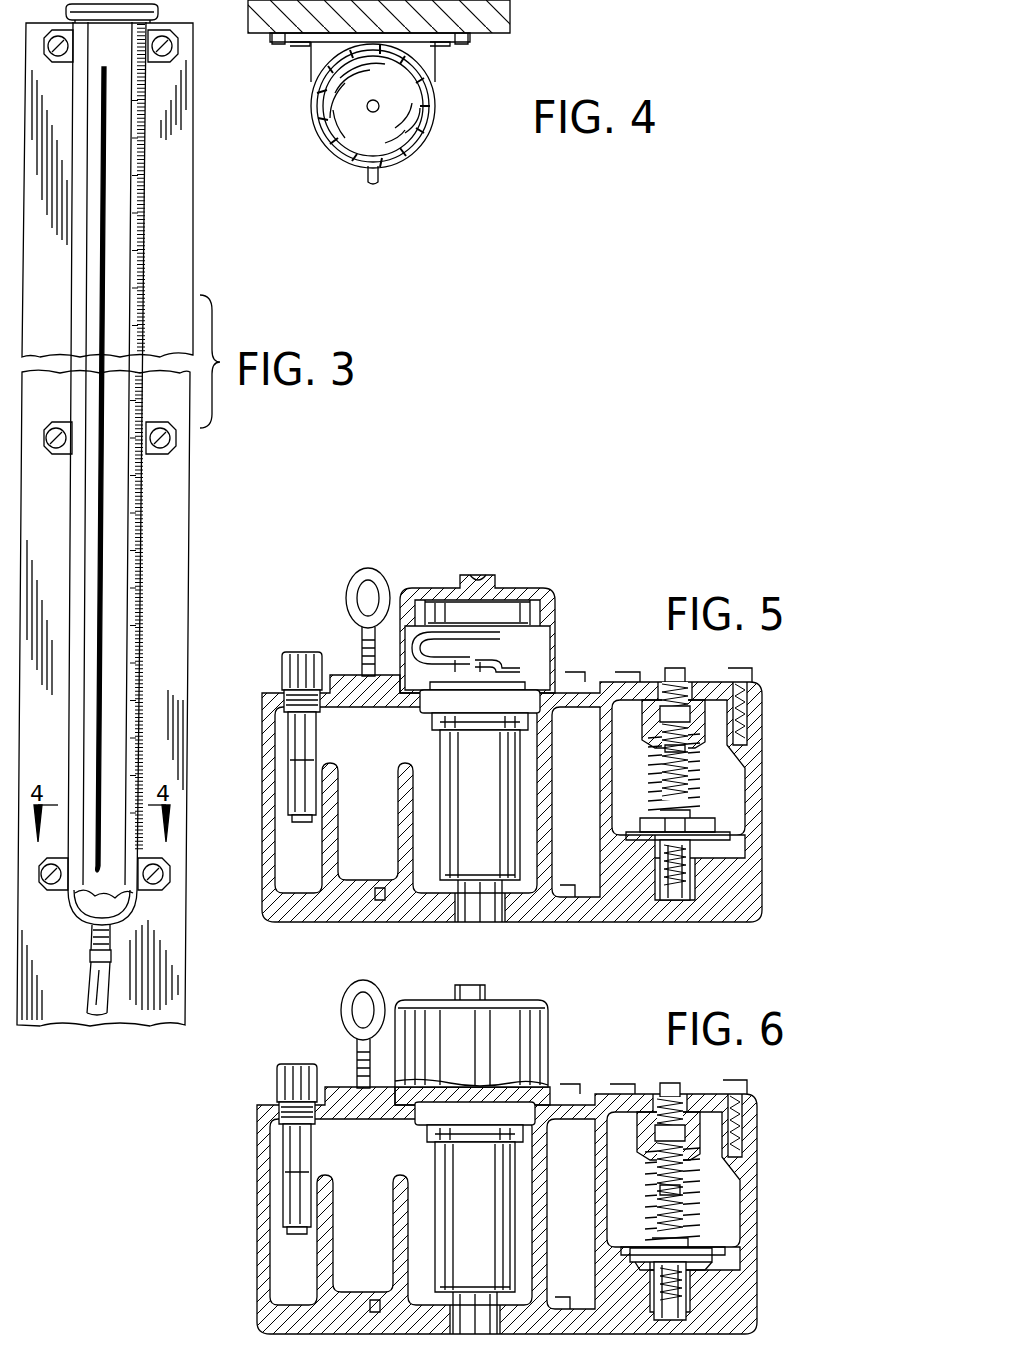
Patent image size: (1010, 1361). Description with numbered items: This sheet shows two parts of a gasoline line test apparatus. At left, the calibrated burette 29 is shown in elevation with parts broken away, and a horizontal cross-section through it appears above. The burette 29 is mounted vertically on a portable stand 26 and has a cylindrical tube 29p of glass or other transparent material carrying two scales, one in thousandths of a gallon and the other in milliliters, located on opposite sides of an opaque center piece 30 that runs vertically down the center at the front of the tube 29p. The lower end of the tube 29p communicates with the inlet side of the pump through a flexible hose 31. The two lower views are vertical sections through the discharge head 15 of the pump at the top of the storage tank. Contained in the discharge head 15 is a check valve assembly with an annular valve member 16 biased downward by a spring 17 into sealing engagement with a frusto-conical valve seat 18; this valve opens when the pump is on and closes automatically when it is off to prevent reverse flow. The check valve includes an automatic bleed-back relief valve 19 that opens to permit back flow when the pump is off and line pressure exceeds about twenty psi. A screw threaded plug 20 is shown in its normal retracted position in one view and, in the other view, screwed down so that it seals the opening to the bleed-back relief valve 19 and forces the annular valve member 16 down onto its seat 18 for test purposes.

In FIG. 5, the discharge head 15 is at (767, 735).
In FIG. 6, the discharge head 15 is at (760, 1148).
In FIG. 5, the annular valve member 16 is at (700, 825).
In FIG. 6, the annular valve member 16 is at (698, 1250).
In FIG. 5, the spring 17 is at (698, 779).
In FIG. 6, the spring 17 is at (696, 1200).
In FIG. 5, the frusto-conical valve seat 18 is at (628, 840).
In FIG. 6, the frusto-conical valve seat 18 is at (622, 1256).
In FIG. 5, the bleed-back relief valve 19 is at (658, 852).
In FIG. 6, the bleed-back relief valve 19 is at (655, 1272).
In FIG. 5, the screw threaded plug 20 is at (655, 762).
In FIG. 6, the screw threaded plug 20 is at (655, 1204).
In FIG. 3, the portable stand 26 is at (181, 231).
In FIG. 4, the portable stand 26 is at (500, 4).
In FIG. 3, the burette 29 is at (150, 513).
In FIG. 3, the cylindrical tube 29p is at (138, 568).
In FIG. 4, the cylindrical tube 29p is at (428, 133).
In FIG. 3, the opaque center piece 30 is at (117, 196).
In FIG. 4, the opaque center piece 30 is at (395, 168).
In FIG. 3, the flexible hose 31 is at (88, 972).